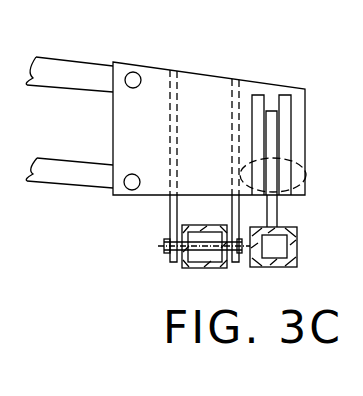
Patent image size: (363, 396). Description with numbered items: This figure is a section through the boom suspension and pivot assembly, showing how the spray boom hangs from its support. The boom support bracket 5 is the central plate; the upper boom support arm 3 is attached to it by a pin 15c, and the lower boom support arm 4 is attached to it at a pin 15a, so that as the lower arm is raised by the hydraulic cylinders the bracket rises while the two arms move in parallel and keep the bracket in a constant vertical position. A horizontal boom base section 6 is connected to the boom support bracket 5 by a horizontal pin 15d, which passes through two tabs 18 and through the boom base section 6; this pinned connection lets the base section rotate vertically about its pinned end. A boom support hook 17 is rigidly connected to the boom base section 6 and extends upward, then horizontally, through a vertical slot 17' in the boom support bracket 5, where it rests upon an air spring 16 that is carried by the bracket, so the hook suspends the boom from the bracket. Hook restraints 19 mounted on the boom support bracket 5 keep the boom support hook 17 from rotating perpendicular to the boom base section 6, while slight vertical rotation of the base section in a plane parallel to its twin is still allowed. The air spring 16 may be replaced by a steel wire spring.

The upper boom support arm 3 is at (52, 74).
The lower boom support arm 4 is at (52, 163).
The boom support bracket 5 is at (148, 120).
The boom base section 6 is at (298, 243).
The pin 15a is at (113, 195).
The pin 15c is at (135, 72).
The horizontal pin 15d is at (164, 246).
The air spring 16 is at (307, 180).
The boom support hook 17 is at (288, 211).
The vertical slot 17' is at (280, 127).
The tabs 18 is at (170, 215).
The hook restraints 19 is at (257, 95).